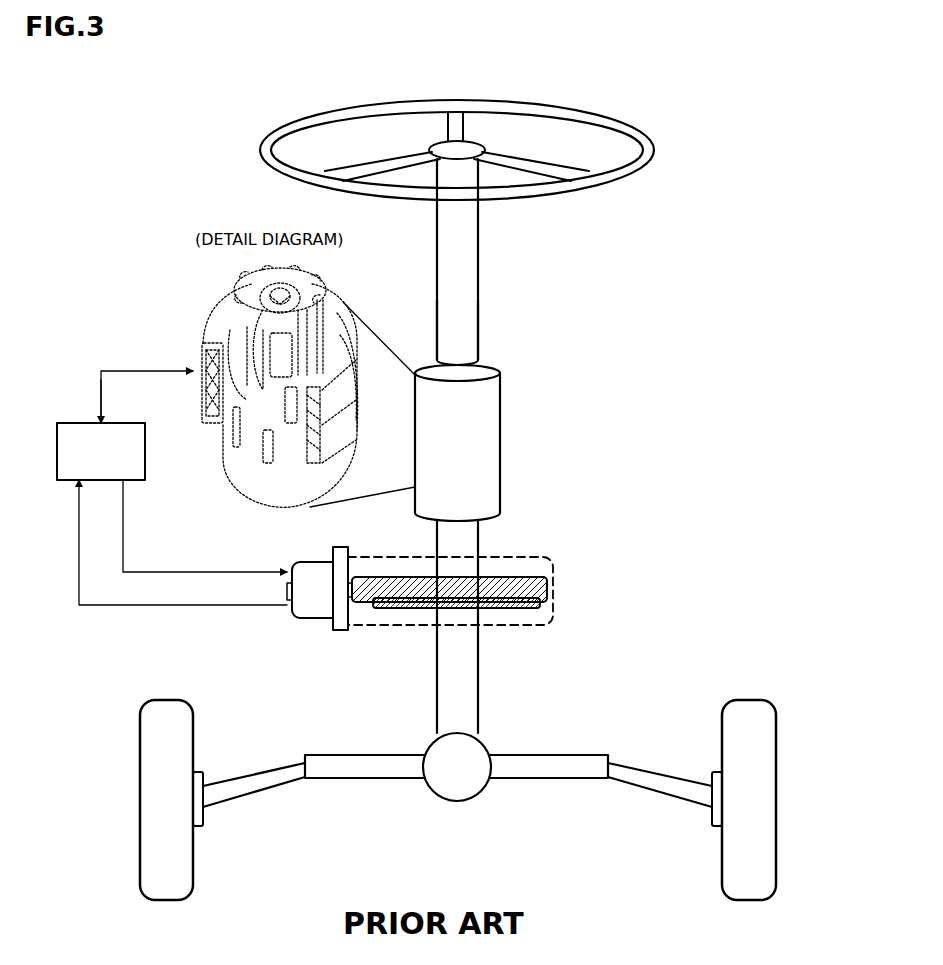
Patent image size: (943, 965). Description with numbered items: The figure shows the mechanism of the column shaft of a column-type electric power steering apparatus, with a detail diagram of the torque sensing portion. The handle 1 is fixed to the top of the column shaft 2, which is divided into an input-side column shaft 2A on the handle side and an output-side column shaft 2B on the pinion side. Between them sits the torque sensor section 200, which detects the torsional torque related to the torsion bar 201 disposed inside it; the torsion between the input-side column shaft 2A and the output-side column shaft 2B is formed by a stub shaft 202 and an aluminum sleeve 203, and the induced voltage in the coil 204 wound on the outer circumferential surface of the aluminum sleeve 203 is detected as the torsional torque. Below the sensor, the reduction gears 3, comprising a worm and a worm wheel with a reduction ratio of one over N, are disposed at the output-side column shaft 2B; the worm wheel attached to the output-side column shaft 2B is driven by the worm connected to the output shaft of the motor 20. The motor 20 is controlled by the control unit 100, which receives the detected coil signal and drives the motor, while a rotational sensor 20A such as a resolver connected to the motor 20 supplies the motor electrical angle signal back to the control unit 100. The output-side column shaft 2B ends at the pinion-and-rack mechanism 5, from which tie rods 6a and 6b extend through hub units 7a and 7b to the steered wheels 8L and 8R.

The handle 1 is at (290, 117).
The column shaft 2 is at (483, 232).
The input-side column shaft 2A is at (480, 327).
The output-side column shaft 2B is at (482, 655).
The torque sensor section 200 is at (485, 393).
The torsion bar 201 is at (290, 288).
The stub shaft 202 is at (250, 287).
The aluminum sleeve 203 is at (224, 460).
The coil 204 is at (205, 360).
The control unit (ECU) 100 is at (140, 412).
The motor 20 is at (323, 560).
The rotational sensor 20A is at (287, 590).
The reduction gears 3 is at (385, 632).
The pinion-and-rack mechanism 5 is at (475, 752).
The tie rod 6a is at (237, 777).
The tie rod 6b is at (640, 765).
The hub unit 7a is at (205, 822).
The hub unit 7b is at (712, 822).
The steered wheel 8L is at (190, 880).
The steered wheel 8R is at (722, 880).